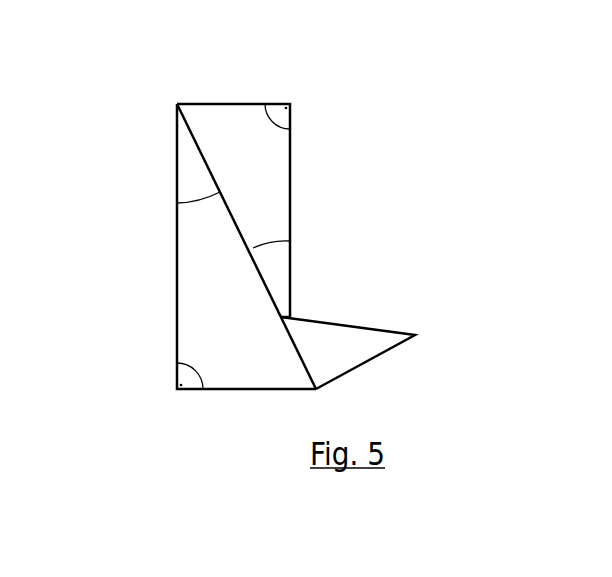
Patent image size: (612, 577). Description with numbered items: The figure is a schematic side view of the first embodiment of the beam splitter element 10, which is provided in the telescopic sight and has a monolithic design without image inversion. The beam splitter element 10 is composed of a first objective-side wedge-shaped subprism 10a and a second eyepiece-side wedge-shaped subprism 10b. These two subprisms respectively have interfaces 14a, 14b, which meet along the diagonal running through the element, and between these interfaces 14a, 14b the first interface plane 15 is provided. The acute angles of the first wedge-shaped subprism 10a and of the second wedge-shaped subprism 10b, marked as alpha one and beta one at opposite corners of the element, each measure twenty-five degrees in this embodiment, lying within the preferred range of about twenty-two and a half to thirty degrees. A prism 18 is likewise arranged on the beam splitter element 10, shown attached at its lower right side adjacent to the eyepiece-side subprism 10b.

The beam splitter element 10 is at (241, 268).
The first objective-side wedge-shaped subprism 10a is at (192, 235).
The second eyepiece-side wedge-shaped subprism 10b is at (280, 182).
The prism 18 is at (332, 343).
The interface 14a is at (275, 307).
The interface 14b is at (187, 311).
The first interface plane 15 is at (187, 311).